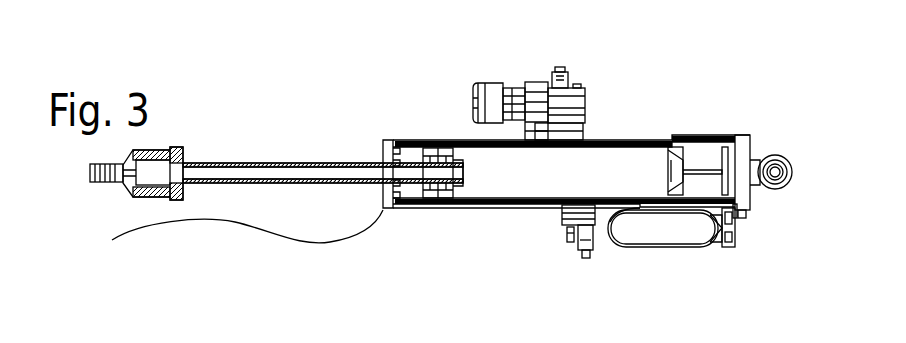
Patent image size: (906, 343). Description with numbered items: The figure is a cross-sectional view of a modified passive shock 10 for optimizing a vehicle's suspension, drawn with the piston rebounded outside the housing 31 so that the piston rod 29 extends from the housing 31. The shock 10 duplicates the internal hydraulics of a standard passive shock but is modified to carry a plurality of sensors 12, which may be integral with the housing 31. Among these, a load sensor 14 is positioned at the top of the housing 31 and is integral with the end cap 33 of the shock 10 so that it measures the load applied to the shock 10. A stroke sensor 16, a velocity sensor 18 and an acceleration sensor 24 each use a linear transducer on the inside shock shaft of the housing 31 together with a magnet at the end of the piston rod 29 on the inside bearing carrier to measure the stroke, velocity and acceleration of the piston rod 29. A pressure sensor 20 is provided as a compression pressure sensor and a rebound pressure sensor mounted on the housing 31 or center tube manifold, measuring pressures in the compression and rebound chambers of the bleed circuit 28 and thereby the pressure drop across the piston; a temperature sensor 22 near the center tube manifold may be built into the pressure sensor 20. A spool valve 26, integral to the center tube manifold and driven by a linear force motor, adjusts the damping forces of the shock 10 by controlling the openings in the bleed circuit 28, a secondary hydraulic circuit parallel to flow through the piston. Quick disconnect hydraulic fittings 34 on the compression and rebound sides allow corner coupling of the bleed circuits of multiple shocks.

The shock 10 is at (380, 52).
The sensors 12 is at (330, 266).
The load sensor 14 is at (750, 143).
The stroke sensor 16 is at (145, 200).
The velocity sensor 18 is at (153, 173).
The acceleration sensor 24 is at (113, 173).
The pressure sensor 20 is at (580, 40).
The temperature sensor 22 is at (571, 162).
The spool valve 26 is at (540, 82).
The bleed circuit 28 is at (466, 88).
The piston rod 29 is at (222, 163).
The housing 31 is at (440, 140).
The end cap 33 is at (758, 97).
The quick disconnect hydraulic fitting 34 is at (585, 86).